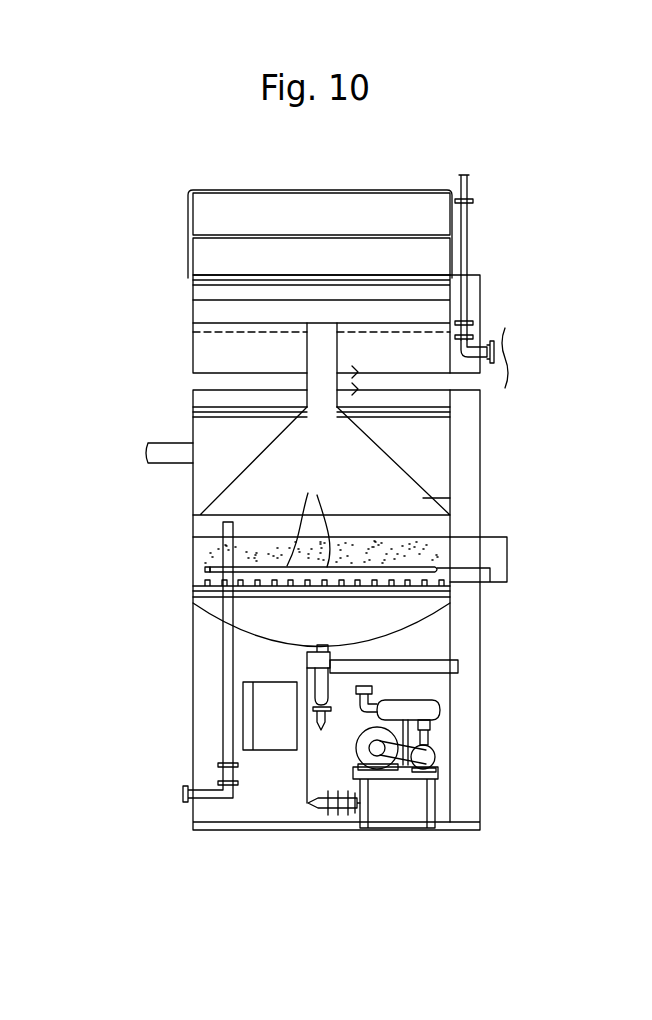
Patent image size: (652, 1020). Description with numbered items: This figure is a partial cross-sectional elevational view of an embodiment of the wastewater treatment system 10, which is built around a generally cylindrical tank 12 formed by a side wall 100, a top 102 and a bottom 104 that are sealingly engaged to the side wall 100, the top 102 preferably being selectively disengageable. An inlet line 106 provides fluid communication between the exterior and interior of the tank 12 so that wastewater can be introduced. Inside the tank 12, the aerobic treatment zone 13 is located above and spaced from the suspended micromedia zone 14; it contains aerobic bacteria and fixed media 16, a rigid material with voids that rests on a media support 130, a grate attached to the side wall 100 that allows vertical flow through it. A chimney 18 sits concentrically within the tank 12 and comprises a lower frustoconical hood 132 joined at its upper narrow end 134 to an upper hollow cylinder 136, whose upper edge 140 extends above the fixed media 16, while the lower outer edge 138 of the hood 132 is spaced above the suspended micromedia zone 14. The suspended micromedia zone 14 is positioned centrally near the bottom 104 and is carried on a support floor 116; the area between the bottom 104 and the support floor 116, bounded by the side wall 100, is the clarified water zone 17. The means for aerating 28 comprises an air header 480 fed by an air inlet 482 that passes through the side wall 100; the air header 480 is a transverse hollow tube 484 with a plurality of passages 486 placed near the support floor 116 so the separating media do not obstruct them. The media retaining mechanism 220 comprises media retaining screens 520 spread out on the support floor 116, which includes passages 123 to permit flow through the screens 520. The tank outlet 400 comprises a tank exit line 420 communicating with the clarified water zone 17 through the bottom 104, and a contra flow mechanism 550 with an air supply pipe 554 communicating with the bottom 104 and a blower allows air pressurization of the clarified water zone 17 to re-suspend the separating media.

The wastewater treatment system 10 is at (156, 187).
The tank 12 is at (516, 249).
The aerobic treatment zone 13 is at (506, 362).
The suspended micromedia zone 14 is at (413, 553).
The fixed media 16 is at (428, 398).
The clarified water zone 17 is at (285, 620).
The chimney 18 is at (235, 477).
The means for aerating 28 is at (380, 552).
The side wall 100 is at (450, 432).
The top 102 is at (405, 273).
The bottom 104 is at (413, 630).
The inlet line 106 is at (167, 443).
The support floor 116 is at (420, 612).
The passages 123 is at (262, 594).
The media support 130 is at (420, 418).
The frustoconical hood 132 is at (255, 453).
The upper narrow end 134 is at (303, 401).
The upper hollow cylinder 136 is at (305, 347).
The lower outer edge 138 is at (213, 517).
The upper edge 140 is at (337, 323).
The media retaining mechanism 220 is at (400, 662).
The tank outlet 400 is at (415, 640).
The tank exit line 420 is at (418, 673).
The air header 480 is at (210, 568).
The air inlet 482 is at (467, 568).
The transverse hollow tube 484 is at (240, 563).
The passages 486 is at (322, 523).
The media retaining screens 520 is at (287, 582).
The contra flow mechanism 550 is at (466, 763).
The air supply pipe 554 is at (305, 760).